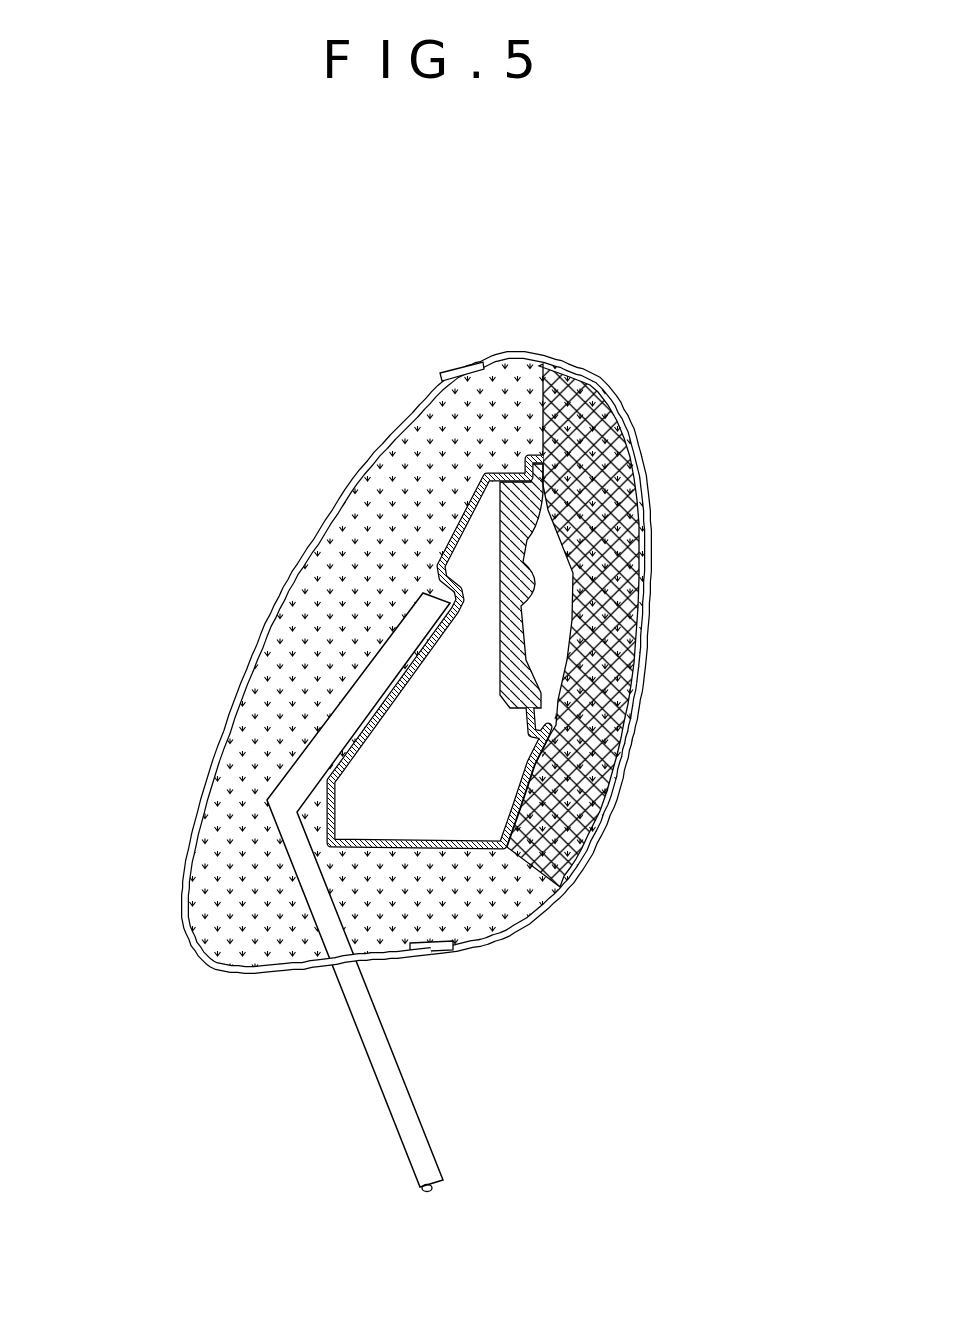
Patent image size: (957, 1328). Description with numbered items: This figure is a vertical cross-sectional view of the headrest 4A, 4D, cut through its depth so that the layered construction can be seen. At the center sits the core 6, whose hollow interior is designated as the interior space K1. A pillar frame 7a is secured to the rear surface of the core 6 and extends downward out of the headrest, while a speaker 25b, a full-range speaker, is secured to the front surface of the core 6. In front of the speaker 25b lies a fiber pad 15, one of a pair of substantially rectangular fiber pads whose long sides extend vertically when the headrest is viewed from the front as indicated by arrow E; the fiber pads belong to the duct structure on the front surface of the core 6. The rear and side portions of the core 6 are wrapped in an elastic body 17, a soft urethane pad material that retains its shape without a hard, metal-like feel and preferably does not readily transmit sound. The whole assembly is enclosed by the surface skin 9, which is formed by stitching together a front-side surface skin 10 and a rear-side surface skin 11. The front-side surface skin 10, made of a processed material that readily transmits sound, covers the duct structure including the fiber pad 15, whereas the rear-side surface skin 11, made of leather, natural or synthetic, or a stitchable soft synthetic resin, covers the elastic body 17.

The headrest 4A is at (426, 696).
The seat back 4D is at (426, 696).
The core 6 is at (447, 540).
The pillar frame 7a is at (410, 1142).
The surface skin 9 is at (416, 581).
The front-side surface skin 10 is at (633, 420).
The rear-side surface skin 11 is at (349, 604).
The fiber pad 15 is at (587, 745).
The elastic body 17 is at (300, 665).
The speaker 25b is at (510, 547).
The interior space K1 is at (450, 800).
The arrow E is at (735, 623).